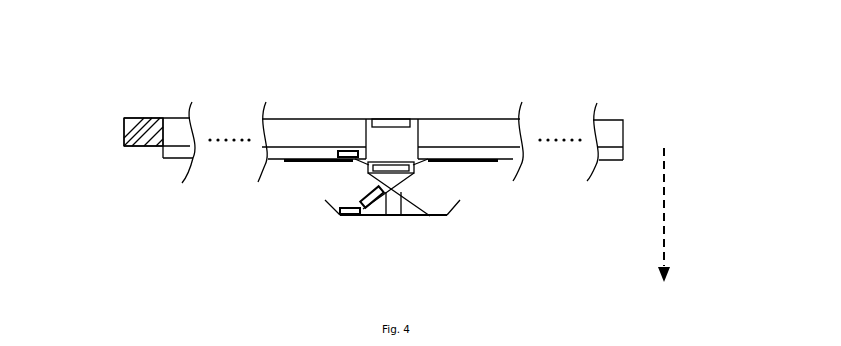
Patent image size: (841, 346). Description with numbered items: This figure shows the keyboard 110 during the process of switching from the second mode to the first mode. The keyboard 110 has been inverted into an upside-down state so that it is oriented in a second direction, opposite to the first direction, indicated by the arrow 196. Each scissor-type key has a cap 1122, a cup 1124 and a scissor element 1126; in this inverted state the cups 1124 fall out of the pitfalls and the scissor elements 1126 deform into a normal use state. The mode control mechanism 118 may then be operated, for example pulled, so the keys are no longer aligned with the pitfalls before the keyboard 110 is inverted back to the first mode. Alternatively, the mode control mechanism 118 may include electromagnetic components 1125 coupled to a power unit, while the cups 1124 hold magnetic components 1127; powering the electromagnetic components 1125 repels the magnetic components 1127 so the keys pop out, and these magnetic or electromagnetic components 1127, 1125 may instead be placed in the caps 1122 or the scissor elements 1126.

The keyboard 110 is at (211, 53).
The mode control mechanism 118 is at (125, 123).
The electromagnetic components 1125 is at (353, 150).
The magnetic components 1127 is at (405, 163).
The cup 1124 is at (380, 190).
The scissor element 1126 is at (397, 215).
The cap 1122 is at (443, 214).
The arrow indicating second direction 196 is at (690, 215).